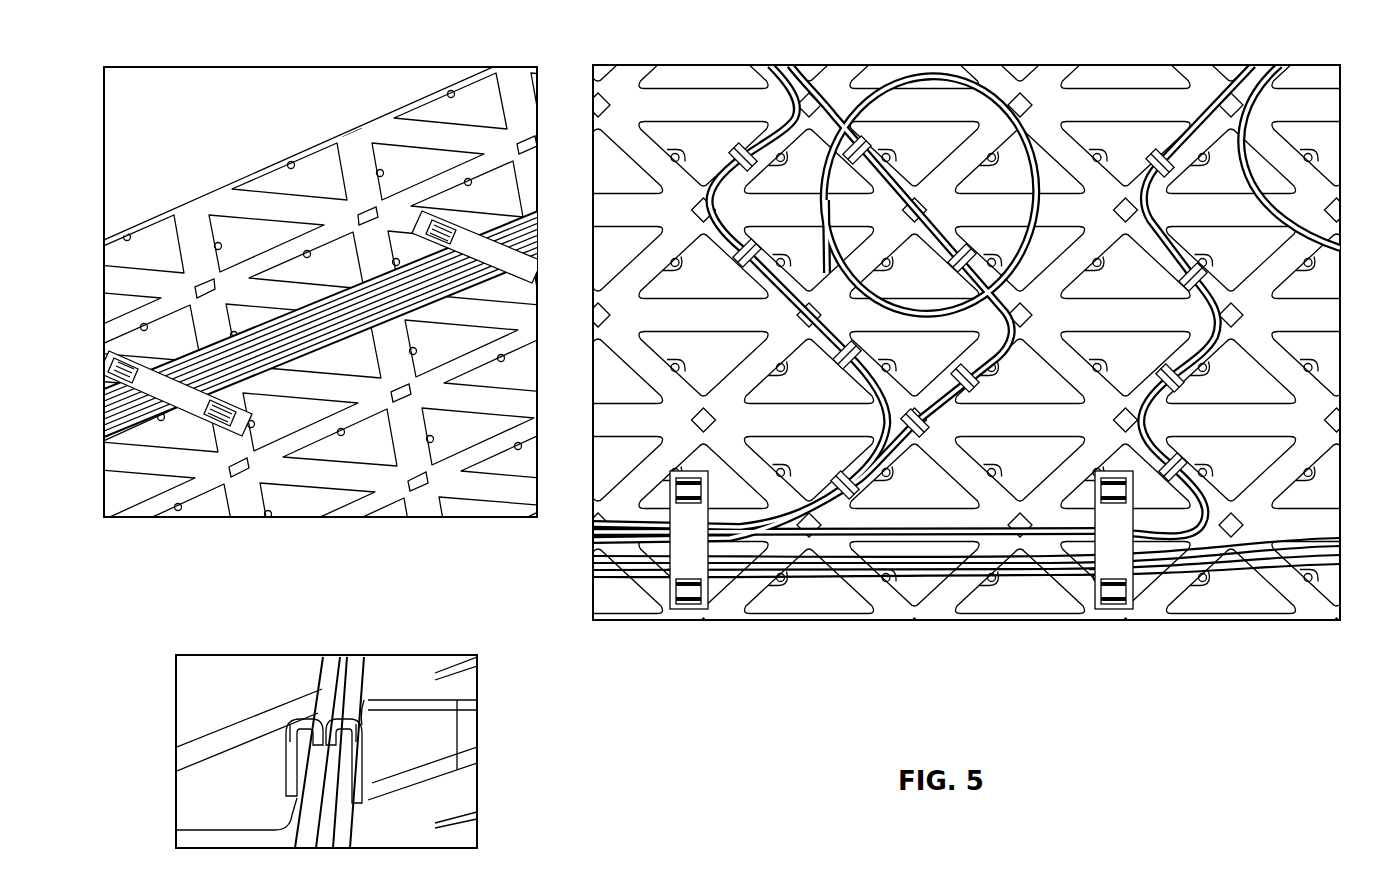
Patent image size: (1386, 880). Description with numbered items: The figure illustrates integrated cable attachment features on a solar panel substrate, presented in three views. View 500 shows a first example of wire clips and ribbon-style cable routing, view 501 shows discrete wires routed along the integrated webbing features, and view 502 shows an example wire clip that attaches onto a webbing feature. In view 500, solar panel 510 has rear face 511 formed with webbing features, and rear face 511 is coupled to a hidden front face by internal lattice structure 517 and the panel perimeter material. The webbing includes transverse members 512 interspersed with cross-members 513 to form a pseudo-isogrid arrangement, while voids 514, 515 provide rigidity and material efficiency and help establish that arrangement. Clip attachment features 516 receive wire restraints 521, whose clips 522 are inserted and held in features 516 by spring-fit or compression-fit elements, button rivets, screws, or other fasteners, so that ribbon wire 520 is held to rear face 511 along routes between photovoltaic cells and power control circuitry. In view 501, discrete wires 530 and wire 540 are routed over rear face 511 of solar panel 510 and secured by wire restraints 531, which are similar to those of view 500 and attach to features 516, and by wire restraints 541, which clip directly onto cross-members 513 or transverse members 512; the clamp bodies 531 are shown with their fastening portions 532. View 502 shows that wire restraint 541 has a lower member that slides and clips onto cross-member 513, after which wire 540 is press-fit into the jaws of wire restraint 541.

The view 500 is at (178, 46).
The view 501 is at (662, 46).
The view 502 is at (186, 637).
The solar panel 510 is at (693, 418).
The rear face 511 is at (349, 140).
The transverse members 512 is at (122, 329).
The cross-members 513 is at (355, 812).
The voids 514 is at (1029, 459).
The voids 515 is at (351, 205).
The clip attachment features 516 is at (778, 466).
The internal lattice structure 517 is at (323, 278).
The ribbon wire 520 is at (320, 325).
The wire restraints 521 is at (320, 323).
The clips 522 is at (246, 453).
The discrete wires 530 is at (815, 582).
The wire restraints 531 is at (692, 548).
The clamp fastener 532 is at (690, 614).
The wire 540 is at (1017, 205).
The wire restraint 541 is at (866, 346).